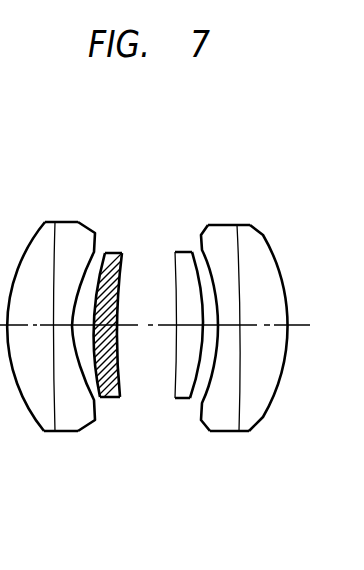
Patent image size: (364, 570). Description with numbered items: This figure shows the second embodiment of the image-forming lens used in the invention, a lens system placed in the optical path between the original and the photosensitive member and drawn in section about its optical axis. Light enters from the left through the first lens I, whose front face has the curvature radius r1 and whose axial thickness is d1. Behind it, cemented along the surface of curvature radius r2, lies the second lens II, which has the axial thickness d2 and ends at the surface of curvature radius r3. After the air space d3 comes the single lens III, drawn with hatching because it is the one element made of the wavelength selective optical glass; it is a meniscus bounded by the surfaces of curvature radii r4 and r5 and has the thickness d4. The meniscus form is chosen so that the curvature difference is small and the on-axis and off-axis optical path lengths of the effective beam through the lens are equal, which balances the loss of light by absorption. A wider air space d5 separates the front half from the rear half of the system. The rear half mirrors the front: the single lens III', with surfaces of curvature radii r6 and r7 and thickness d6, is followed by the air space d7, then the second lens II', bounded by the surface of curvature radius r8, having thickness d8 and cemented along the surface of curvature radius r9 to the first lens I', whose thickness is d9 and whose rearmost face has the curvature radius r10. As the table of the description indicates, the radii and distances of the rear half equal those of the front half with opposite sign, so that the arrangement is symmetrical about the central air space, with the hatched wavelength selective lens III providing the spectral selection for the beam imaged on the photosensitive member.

The first lens I is at (37, 256).
The second lens II is at (77, 256).
The single lens of wavelength selective optical glass III is at (130, 241).
The rear single lens III' is at (179, 239).
The rear second lens II' is at (224, 255).
The rear first lens I' is at (269, 255).
The curvature radius of first surface r1 is at (29, 240).
The curvature radius of second surface r2 is at (55, 222).
The curvature radius of third surface r3 is at (89, 277).
The curvature radius of fourth surface r4 is at (105, 253).
The curvature radius of fifth surface r5 is at (124, 266).
The curvature radius of sixth surface r6 is at (175, 265).
The curvature radius of seventh surface r7 is at (193, 252).
The curvature radius of eighth surface r8 is at (212, 225).
The curvature radius of ninth surface r9 is at (238, 225).
The curvature radius of tenth surface r10 is at (275, 260).
The axial thickness of first lens d1 is at (27, 326).
The axial thickness of second lens d2 is at (64, 326).
The air space between second lens and hatched lens d3 is at (90, 326).
The axial thickness of wavelength selective lens d4 is at (112, 326).
The central air space d5 is at (148, 326).
The axial thickness of rear single lens d6 is at (183, 326).
The air space between rear single lens and rear second lens d7 is at (211, 326).
The axial thickness of rear second lens d8 is at (227, 326).
The axial thickness of rear first lens d9 is at (265, 326).